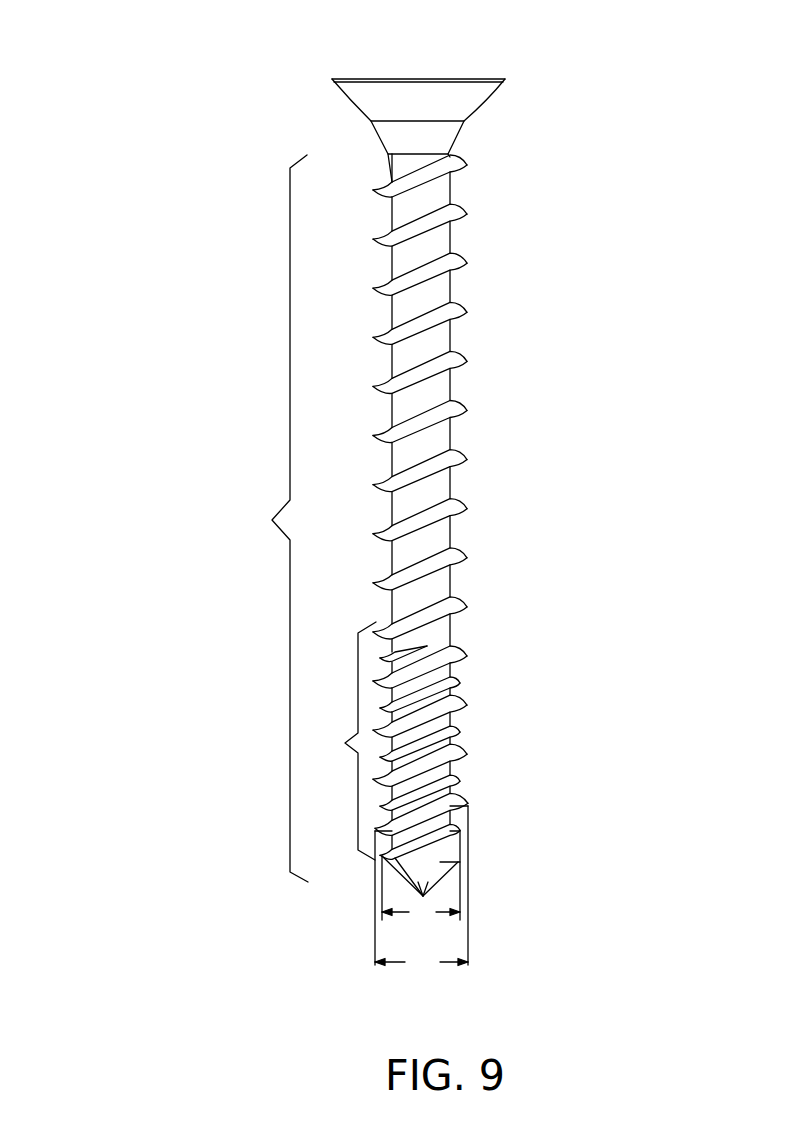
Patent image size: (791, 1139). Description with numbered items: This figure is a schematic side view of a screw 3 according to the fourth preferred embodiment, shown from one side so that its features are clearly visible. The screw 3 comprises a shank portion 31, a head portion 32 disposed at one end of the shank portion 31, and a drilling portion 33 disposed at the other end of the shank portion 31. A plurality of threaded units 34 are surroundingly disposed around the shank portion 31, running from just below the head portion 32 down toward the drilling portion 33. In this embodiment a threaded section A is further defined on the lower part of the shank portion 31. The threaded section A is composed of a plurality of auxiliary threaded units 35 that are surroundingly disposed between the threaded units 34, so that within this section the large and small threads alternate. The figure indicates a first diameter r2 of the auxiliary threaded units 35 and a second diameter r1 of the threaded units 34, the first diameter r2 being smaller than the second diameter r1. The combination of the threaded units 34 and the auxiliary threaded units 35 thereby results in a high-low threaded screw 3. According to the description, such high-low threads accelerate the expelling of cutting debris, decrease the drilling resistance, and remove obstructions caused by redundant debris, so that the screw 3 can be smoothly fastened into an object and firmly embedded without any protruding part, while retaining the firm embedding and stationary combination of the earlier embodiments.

The screw 3 is at (157, 156).
The shank portion 31 is at (451, 487).
The head portion 32 is at (505, 80).
The drilling portion 33 is at (460, 868).
The threaded units 34 is at (274, 518).
The auxiliary threaded units 35 is at (455, 682).
The threaded section A is at (350, 741).
The second diameter r1 is at (421, 891).
The first diameter r2 is at (421, 878).